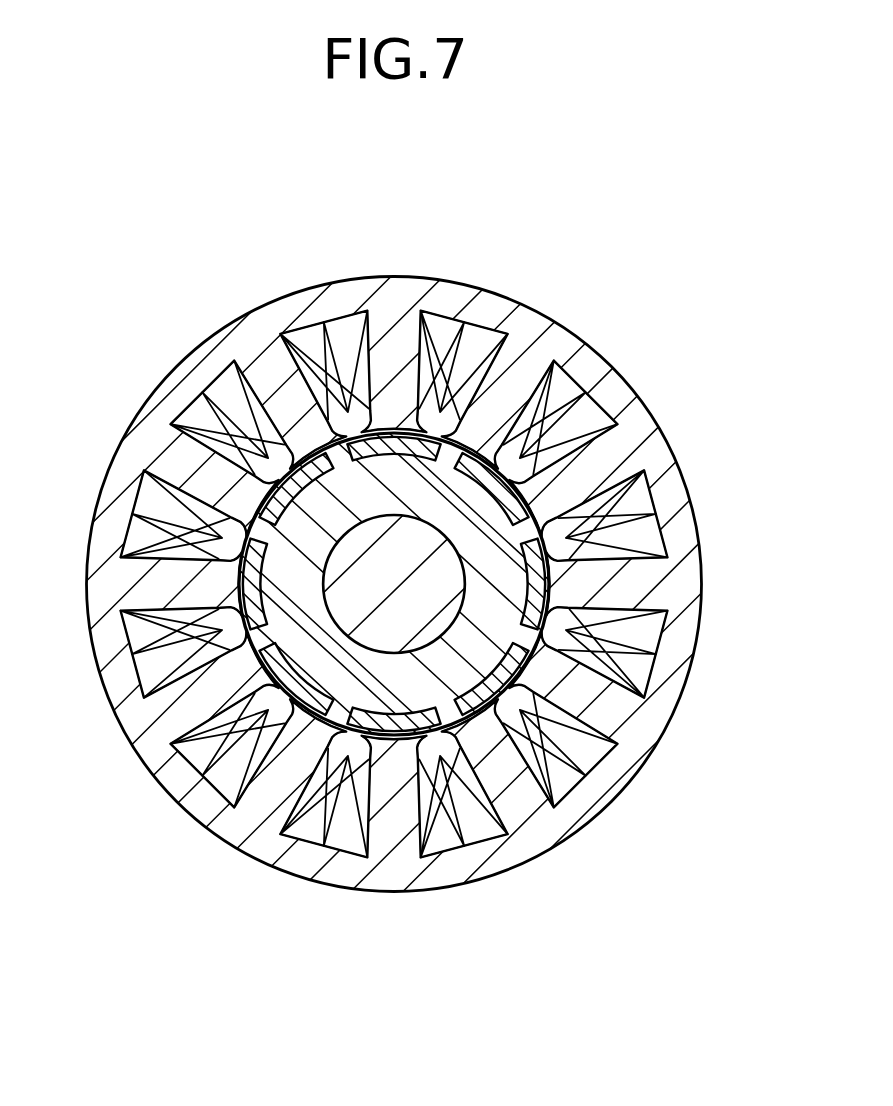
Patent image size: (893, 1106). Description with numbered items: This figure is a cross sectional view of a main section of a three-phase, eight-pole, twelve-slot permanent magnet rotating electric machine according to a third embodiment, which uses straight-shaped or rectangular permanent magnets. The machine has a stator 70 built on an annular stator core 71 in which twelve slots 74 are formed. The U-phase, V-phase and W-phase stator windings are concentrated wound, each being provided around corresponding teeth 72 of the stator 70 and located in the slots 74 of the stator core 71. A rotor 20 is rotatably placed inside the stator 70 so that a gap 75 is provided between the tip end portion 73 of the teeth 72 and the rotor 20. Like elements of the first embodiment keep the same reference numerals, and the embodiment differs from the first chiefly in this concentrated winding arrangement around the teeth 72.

The rotor 20 is at (496, 713).
The stator 70 is at (590, 352).
The annular stator core 71 is at (258, 335).
The teeth 72 is at (612, 460).
The tip end portion 73 is at (285, 755).
The slots 74 is at (177, 403).
The gap 75 is at (553, 558).